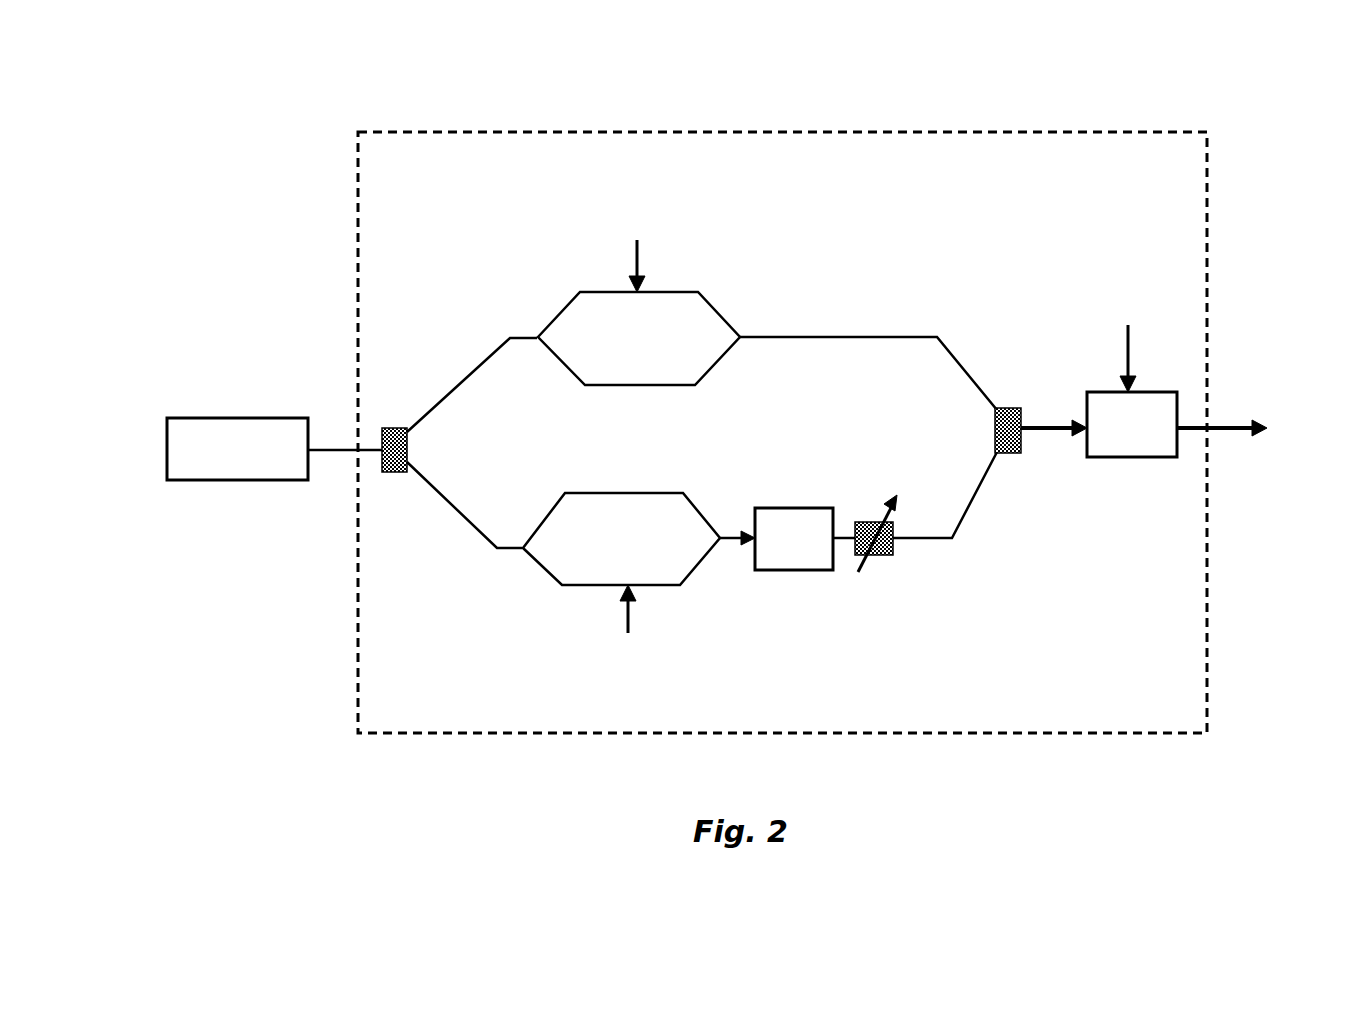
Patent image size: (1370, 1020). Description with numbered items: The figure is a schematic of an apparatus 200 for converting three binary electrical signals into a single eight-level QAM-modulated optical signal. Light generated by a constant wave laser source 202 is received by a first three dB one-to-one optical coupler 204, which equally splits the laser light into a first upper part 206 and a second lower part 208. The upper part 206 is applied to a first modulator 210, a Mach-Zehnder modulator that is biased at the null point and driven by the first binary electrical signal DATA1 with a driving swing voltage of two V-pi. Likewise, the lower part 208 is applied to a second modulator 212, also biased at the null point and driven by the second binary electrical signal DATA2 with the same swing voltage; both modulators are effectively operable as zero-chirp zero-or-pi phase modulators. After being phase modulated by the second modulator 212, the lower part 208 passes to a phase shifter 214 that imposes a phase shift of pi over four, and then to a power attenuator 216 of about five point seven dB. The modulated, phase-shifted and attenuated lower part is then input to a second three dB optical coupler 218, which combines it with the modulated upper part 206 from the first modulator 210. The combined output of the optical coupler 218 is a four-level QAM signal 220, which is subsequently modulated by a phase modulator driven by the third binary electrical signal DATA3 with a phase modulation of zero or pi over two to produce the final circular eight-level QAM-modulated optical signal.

The apparatus 200 is at (840, 92).
The constant wave laser source 202 is at (240, 482).
The first 3 dB 1:1 optical coupler 204 is at (392, 418).
The first (upper) part 206 is at (478, 386).
The second (lower) part 208 is at (457, 512).
The first modulator 210 is at (710, 305).
The second modulator 212 is at (685, 495).
The phase shifter 214 is at (815, 575).
The power attenuator 216 is at (888, 557).
The second 3 dB optical coupler 218 is at (1003, 408).
The four-level QAM signal 220 is at (1160, 390).